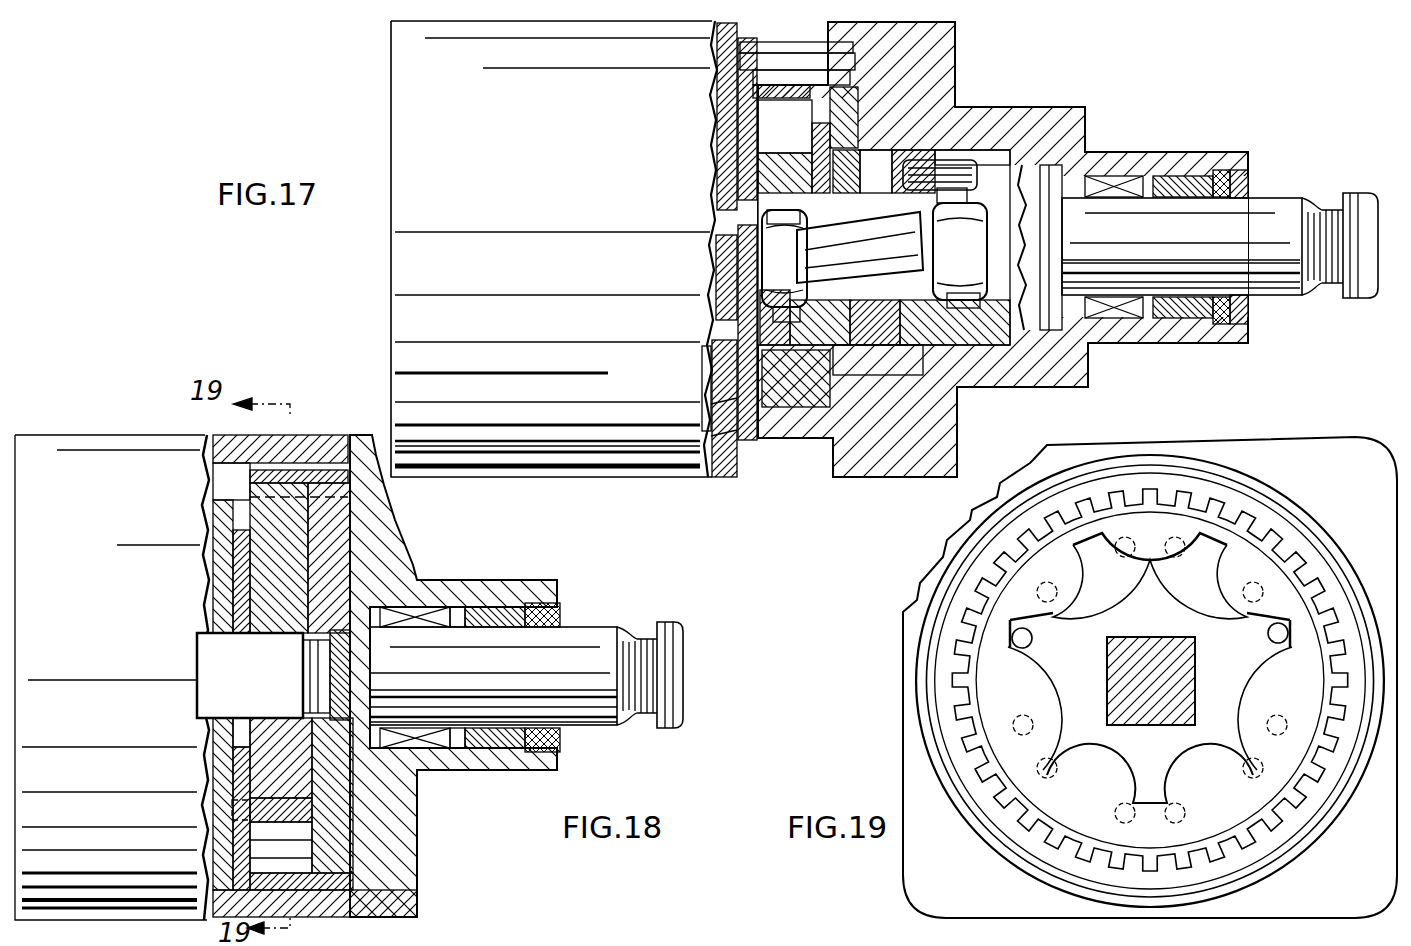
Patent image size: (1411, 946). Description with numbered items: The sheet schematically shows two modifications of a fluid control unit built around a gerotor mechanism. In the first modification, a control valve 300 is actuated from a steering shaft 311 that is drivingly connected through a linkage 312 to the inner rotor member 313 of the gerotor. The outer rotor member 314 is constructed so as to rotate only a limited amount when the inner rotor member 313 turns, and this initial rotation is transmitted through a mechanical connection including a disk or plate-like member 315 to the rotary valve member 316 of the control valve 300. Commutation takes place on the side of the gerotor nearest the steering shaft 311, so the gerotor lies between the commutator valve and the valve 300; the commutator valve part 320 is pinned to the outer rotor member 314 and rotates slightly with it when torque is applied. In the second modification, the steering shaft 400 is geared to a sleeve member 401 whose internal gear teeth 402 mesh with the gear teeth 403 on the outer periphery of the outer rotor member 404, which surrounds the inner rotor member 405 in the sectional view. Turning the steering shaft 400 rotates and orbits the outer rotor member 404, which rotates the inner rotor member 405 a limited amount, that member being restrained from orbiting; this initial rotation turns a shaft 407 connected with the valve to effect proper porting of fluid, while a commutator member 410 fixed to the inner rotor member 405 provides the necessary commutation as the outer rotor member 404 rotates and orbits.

In FIG. 17, the control valve 300 is at (712, 197).
In FIG. 17, the steering shaft 311 is at (1283, 197).
In FIG. 17, the linkage 312 is at (905, 250).
In FIG. 17, the inner rotor member 313 is at (705, 370).
In FIG. 17, the outer rotor member 314 is at (845, 66).
In FIG. 17, the disk or plate-like member 315 is at (745, 150).
In FIG. 17, the rotary valve member 316 is at (728, 199).
In FIG. 17, the commutator valve part 320 is at (870, 132).
In FIG. 18, the steering shaft 400 is at (600, 630).
In FIG. 18, the sleeve member 401 is at (360, 880).
In FIG. 19, the sleeve member 401 is at (1272, 532).
In FIG. 19, the internal gear teeth 402 is at (1300, 780).
In FIG. 19, the gear teeth 403 is at (1150, 668).
In FIG. 18, the outer rotor member 404 is at (252, 496).
In FIG. 19, the outer rotor member 404 is at (1072, 793).
In FIG. 18, the inner rotor member 405 is at (268, 583).
In FIG. 19, the inner rotor member 405 is at (1157, 560).
In FIG. 18, the shaft 407 is at (222, 660).
In FIG. 19, the shaft 407 is at (1158, 645).
In FIG. 18, the commutator member 410 is at (240, 512).